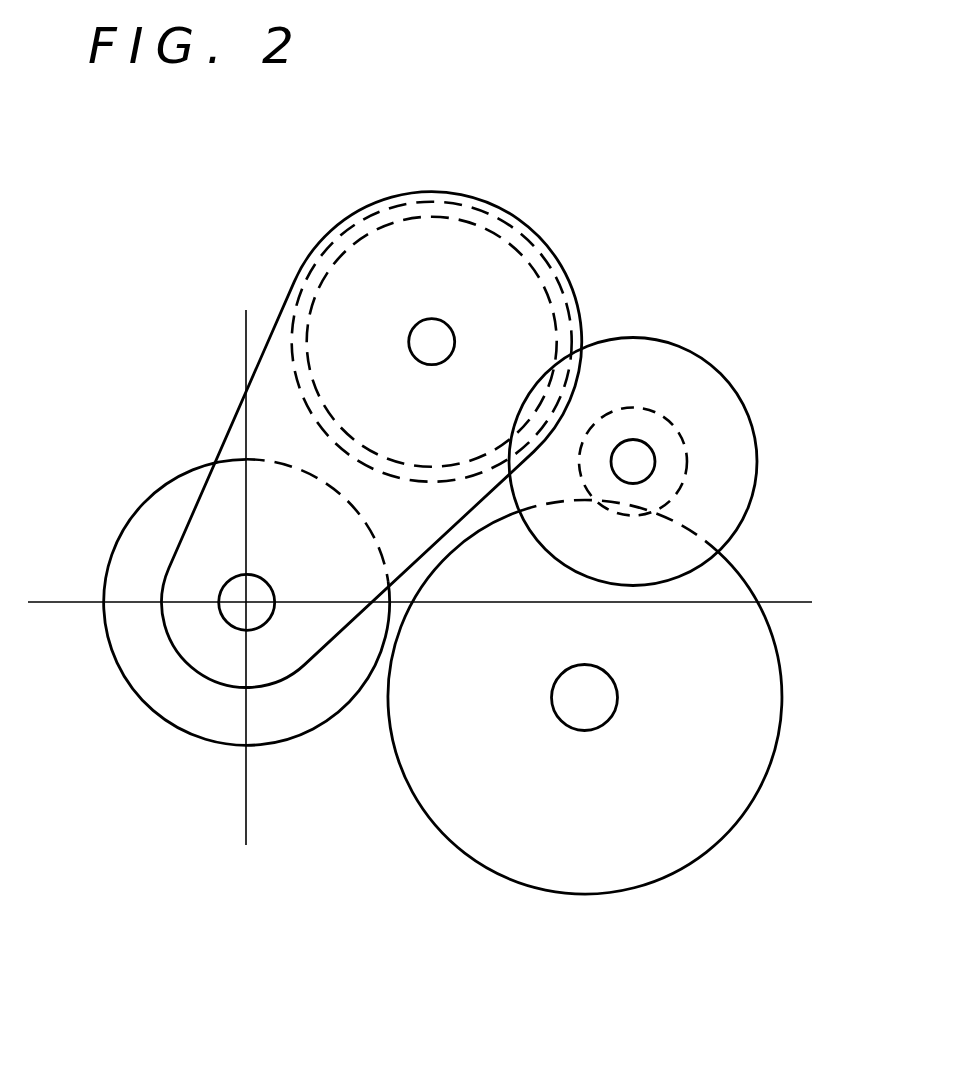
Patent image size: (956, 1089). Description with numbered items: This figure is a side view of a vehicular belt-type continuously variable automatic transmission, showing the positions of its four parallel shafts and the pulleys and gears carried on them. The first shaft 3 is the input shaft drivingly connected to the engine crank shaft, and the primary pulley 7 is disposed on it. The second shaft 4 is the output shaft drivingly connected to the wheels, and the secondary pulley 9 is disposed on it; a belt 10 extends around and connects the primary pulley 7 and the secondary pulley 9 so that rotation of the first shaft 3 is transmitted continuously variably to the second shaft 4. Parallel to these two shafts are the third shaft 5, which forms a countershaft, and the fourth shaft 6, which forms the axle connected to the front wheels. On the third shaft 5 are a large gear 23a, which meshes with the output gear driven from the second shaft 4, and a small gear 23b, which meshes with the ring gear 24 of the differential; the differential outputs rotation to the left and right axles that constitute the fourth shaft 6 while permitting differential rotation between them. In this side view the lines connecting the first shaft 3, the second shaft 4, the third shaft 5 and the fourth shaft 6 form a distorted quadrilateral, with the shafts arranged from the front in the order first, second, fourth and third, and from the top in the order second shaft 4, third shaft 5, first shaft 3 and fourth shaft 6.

The first shaft 3 is at (223, 622).
The second shaft 4 is at (434, 320).
The third shaft 5 is at (633, 441).
The fourth shaft 6 is at (585, 723).
The primary pulley 7 is at (88, 520).
The secondary pulley 9 is at (541, 227).
The belt 10 is at (230, 423).
The large gear 23a is at (690, 346).
The small gear 23b is at (683, 433).
The ring gear 24 is at (743, 573).